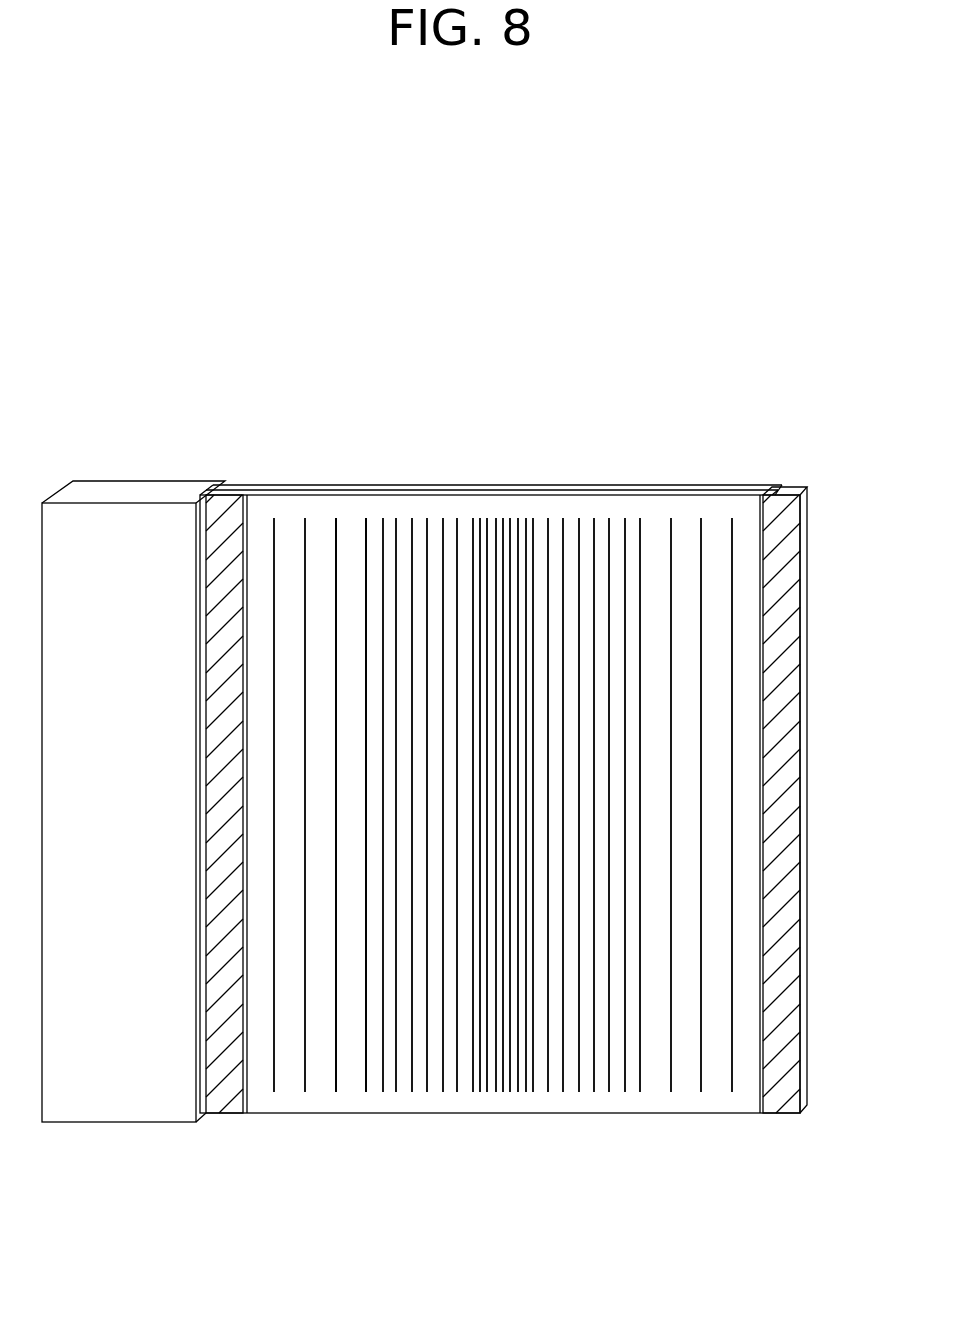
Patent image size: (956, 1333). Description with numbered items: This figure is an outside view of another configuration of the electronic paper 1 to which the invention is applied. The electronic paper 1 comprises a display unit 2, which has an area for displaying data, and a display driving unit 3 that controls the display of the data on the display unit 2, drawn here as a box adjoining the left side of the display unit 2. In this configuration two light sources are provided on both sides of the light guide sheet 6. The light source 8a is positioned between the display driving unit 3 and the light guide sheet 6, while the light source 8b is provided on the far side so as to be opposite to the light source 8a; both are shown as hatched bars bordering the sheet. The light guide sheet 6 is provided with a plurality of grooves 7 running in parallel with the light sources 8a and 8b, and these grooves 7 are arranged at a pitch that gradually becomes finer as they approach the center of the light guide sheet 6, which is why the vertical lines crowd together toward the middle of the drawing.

The electronic paper 1 is at (290, 482).
The display unit 2 is at (478, 1130).
The display driving unit 3 is at (135, 1122).
The light guide sheet 6 is at (563, 505).
The grooves 7 is at (338, 578).
The light source 8a is at (218, 500).
The light source 8b is at (806, 512).